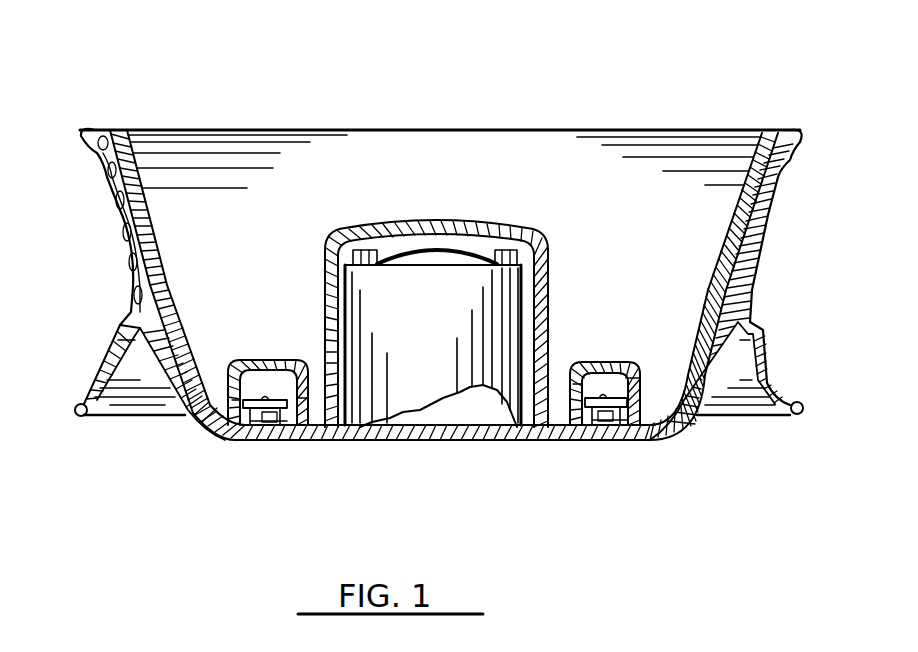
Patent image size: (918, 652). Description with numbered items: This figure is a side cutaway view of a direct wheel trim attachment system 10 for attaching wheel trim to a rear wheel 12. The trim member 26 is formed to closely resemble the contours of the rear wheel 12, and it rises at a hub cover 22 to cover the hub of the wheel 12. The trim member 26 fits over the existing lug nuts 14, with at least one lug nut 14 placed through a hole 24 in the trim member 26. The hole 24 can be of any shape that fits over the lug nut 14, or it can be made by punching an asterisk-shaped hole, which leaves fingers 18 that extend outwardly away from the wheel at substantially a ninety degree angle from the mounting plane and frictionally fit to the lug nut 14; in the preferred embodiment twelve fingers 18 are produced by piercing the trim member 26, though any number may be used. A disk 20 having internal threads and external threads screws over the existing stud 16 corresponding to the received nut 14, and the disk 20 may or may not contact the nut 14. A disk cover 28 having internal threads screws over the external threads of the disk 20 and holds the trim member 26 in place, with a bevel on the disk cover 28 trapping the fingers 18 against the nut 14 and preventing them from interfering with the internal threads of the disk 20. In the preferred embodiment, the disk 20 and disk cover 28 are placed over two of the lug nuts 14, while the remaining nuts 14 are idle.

The direct wheel trim attachment system 10 is at (222, 52).
The rear wheel 12 is at (745, 278).
The lug nut 14 is at (270, 444).
The stud 16 is at (262, 396).
The fingers 18 is at (229, 400).
The disk 20 is at (281, 397).
The hub cover 22 is at (450, 223).
The hole 24 is at (588, 445).
The trim member 26 is at (740, 172).
The disk cover 28 is at (250, 362).